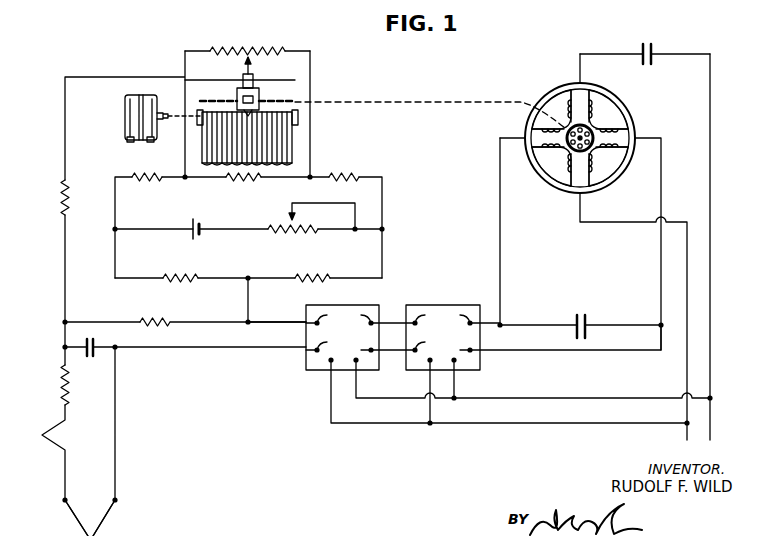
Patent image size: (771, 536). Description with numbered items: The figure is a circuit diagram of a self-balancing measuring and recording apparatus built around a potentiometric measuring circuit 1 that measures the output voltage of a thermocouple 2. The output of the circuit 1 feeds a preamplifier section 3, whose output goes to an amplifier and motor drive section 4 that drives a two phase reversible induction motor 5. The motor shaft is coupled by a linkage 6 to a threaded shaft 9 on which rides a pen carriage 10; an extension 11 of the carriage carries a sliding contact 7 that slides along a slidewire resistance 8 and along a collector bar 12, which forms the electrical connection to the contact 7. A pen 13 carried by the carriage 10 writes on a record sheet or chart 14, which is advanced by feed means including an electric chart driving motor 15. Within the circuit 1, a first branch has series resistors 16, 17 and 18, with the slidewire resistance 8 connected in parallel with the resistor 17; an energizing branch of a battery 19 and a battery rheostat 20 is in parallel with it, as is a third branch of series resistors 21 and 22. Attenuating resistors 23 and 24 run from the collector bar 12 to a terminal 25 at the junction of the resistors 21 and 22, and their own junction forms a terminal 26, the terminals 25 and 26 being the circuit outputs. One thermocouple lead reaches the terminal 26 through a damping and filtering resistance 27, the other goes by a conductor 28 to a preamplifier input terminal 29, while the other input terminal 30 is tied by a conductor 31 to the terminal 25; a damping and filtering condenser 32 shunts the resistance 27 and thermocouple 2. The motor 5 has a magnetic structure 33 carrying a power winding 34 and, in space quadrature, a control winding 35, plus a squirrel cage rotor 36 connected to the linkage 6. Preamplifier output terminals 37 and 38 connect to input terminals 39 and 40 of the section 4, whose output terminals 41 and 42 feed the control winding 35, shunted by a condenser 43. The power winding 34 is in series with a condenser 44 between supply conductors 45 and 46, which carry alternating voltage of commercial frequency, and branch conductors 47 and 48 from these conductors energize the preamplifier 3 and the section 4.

The potentiometric measuring circuit 1 is at (405, 162).
The thermocouple 2 is at (107, 515).
The preamplifier section 3 is at (312, 371).
The amplifier and motor drive section 4 is at (449, 307).
The two phase reversible induction motor 5 is at (579, 194).
The linkage 6 is at (382, 102).
The sliding contact 7 is at (247, 61).
The slidewire resistance 8 is at (256, 51).
The threaded shaft 9 is at (203, 99).
The pen carriage 10 is at (237, 96).
The extension 11 is at (253, 80).
The collector bar 12 is at (209, 76).
The pen 13 is at (262, 99).
The record sheet or chart 14 is at (295, 150).
The electric chart driving motor 15 is at (122, 109).
The resistor 16 is at (137, 183).
The resistor 17 is at (246, 181).
The resistor 18 is at (344, 182).
The battery 19 is at (199, 224).
The battery rheostat 20 is at (288, 221).
The resistor 21 is at (178, 274).
The resistor 22 is at (319, 274).
The attenuating resistor 23 is at (69, 210).
The attenuating resistor 24 is at (165, 321).
The terminal 25 is at (248, 278).
The terminal 26 is at (69, 321).
The damping and filtering resistance 27 is at (61, 384).
The conductor 28 is at (162, 355).
The input terminal 29 is at (325, 338).
The input terminal 30 is at (325, 315).
The conductor 31 is at (261, 322).
The damping and filtering condenser 32 is at (95, 346).
The magnetic structure 33 is at (563, 193).
The power winding 34 is at (592, 151).
The control winding 35 is at (616, 127).
The squirrel cage rotor 36 is at (566, 152).
The output terminal 37 is at (384, 315).
The output terminal 38 is at (378, 350).
The input terminal 39 is at (428, 315).
The input terminal 40 is at (428, 339).
The output terminal 41 is at (475, 315).
The output terminal 42 is at (552, 341).
The condenser 43 is at (587, 325).
The condenser 44 is at (651, 47).
The supply conductor 45 is at (686, 434).
The supply conductor 46 is at (712, 436).
The branch conductor 47 is at (358, 423).
The branch conductor 48 is at (406, 398).